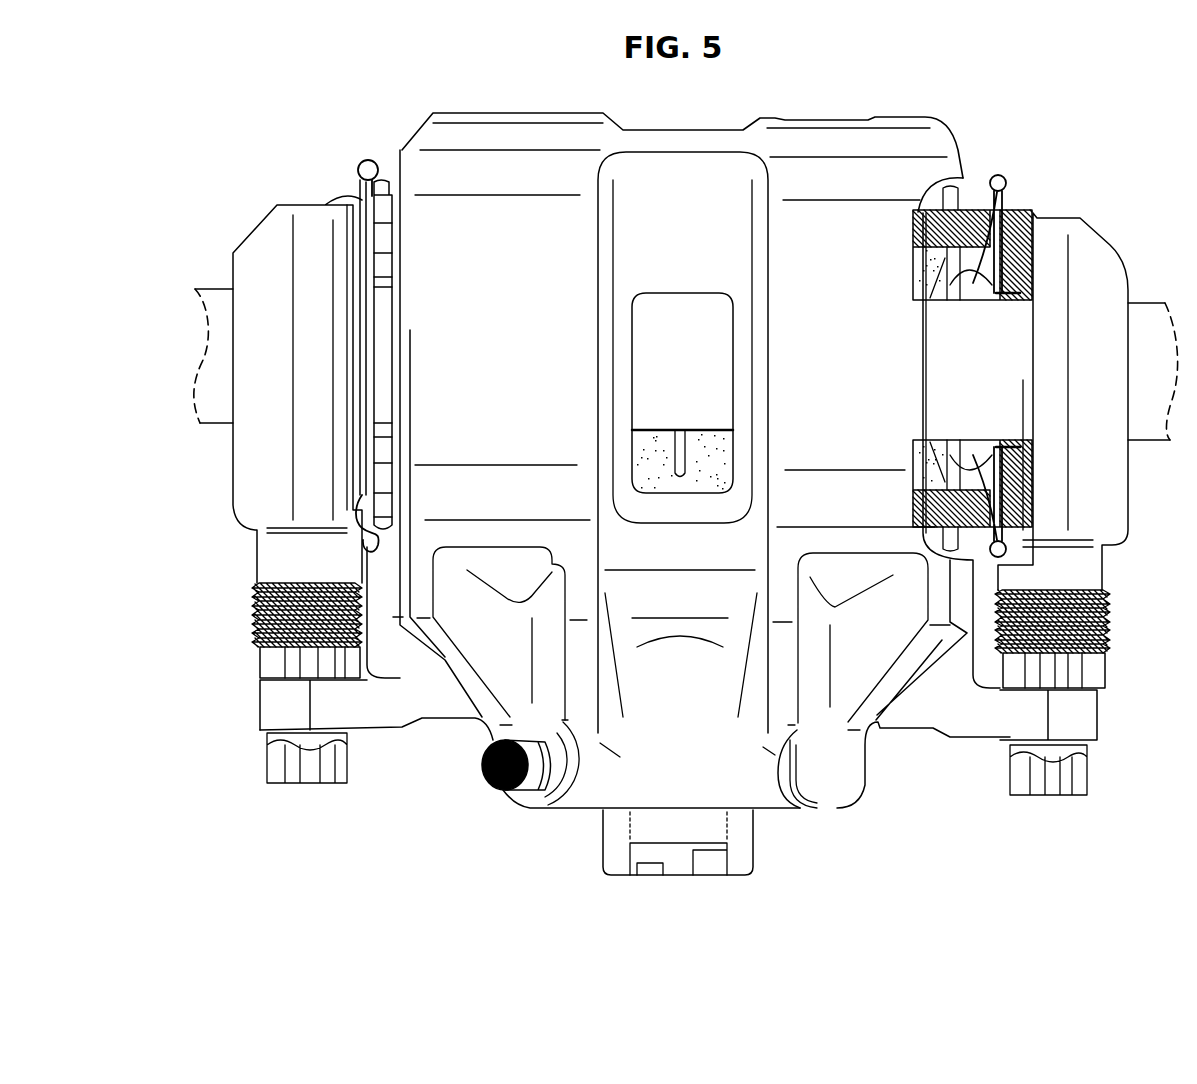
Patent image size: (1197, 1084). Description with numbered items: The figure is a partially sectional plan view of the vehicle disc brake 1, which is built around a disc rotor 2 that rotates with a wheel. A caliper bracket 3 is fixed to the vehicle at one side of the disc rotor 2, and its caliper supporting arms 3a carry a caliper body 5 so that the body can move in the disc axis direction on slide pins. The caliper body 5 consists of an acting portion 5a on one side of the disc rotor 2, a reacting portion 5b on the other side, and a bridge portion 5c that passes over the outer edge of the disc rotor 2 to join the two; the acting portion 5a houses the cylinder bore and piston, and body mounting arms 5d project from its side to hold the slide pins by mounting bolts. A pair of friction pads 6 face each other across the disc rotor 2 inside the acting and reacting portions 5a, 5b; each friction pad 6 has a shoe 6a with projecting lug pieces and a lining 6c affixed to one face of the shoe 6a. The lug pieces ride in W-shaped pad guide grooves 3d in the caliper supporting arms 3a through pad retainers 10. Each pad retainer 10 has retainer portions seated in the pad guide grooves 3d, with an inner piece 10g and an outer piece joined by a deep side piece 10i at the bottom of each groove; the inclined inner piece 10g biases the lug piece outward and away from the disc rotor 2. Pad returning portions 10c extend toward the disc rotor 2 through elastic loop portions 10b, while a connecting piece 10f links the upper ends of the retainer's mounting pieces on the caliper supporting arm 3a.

The vehicle disc brake 1 is at (673, 116).
The disc rotor 2 is at (1157, 303).
The caliper bracket 3 is at (1108, 241).
The caliper supporting arm 3a is at (240, 470).
The pad guide groove 3d is at (990, 283).
The caliper body 5 is at (842, 812).
The acting portion 5a is at (592, 797).
The reacting portion 5b is at (443, 130).
The bridge portion 5c is at (923, 383).
The body mounting arm 5d is at (267, 707).
The friction pad 6 is at (875, 228).
The shoe 6a is at (927, 223).
The lining 6c is at (927, 262).
The pad retainer 10 is at (353, 175).
The elastic loop portion 10b is at (368, 160).
The pad returning portion 10c is at (943, 278).
The connecting piece 10f is at (360, 337).
The inner piece 10g is at (960, 285).
The deep side piece 10i is at (1010, 268).